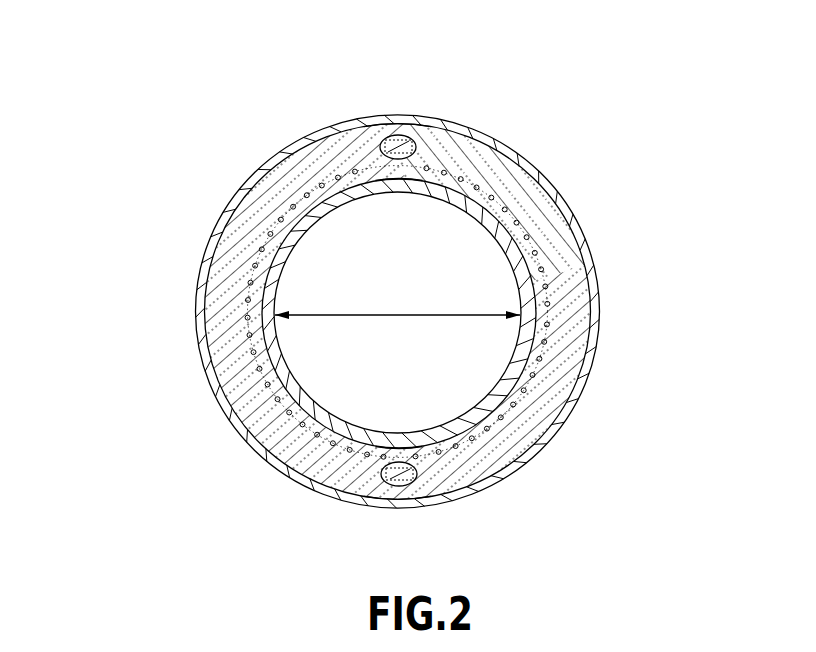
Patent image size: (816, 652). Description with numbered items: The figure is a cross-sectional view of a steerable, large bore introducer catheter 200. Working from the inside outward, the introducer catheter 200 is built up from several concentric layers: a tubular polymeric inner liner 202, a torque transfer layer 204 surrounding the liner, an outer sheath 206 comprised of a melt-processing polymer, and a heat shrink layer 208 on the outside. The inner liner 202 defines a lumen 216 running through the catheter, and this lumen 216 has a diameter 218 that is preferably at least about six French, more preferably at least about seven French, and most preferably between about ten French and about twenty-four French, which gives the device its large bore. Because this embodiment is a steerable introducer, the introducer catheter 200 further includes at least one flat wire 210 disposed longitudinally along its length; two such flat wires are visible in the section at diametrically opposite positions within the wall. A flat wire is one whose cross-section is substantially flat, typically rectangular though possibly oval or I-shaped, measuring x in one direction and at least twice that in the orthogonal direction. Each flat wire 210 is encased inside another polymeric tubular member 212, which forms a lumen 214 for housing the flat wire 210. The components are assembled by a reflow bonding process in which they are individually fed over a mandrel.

The introducer catheter 200 is at (169, 78).
The tubular polymeric inner liner 202 is at (505, 381).
The torque transfer layer 204 is at (542, 350).
The outer sheath 206 is at (545, 252).
The heat shrink layer 208 is at (550, 202).
The flat wire 210 is at (414, 138).
The polymeric tubular member 212 is at (398, 135).
The lumen 214 is at (384, 138).
The lumen 216 is at (320, 388).
The diameter 218 is at (396, 312).